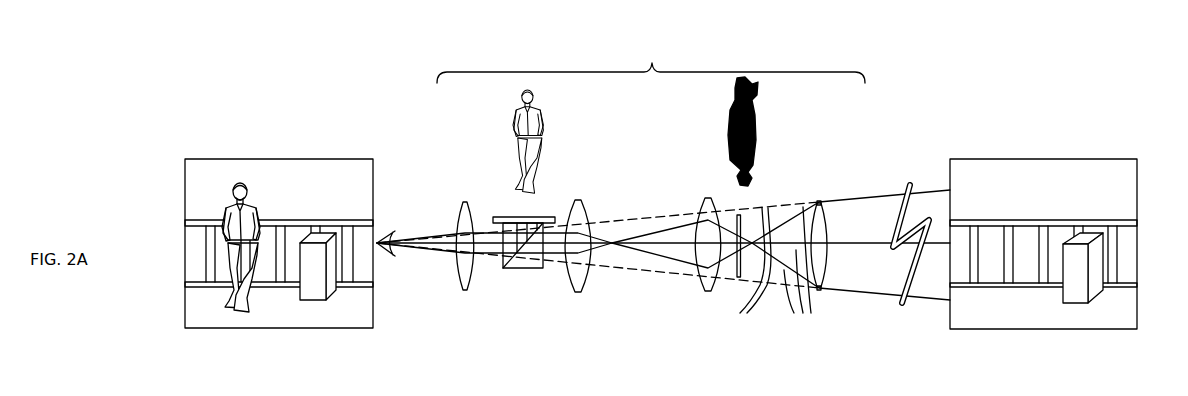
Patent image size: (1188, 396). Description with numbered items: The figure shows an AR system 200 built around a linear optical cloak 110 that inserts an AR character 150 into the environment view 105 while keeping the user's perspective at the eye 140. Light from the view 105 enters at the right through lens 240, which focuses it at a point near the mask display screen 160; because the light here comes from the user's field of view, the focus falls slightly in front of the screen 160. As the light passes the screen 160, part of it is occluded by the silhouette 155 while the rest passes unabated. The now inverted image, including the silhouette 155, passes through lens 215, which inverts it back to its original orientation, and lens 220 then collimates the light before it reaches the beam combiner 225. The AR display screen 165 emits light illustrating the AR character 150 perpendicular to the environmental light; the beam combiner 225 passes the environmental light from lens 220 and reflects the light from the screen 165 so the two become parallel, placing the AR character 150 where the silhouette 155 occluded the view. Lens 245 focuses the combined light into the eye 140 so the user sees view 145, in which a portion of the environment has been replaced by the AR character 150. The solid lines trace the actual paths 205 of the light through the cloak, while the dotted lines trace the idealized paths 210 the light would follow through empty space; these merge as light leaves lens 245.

The AR system 200 is at (447, 44).
The optical cloak 110 is at (651, 60).
The view 105 is at (990, 330).
The view 145 is at (232, 329).
The eye 140 is at (382, 230).
The AR character 150 is at (515, 121).
The silhouette 155 is at (757, 119).
The mask display screen 160 is at (746, 213).
The AR display screen 165 is at (549, 213).
The actual paths 205 is at (798, 285).
The idealized paths 210 is at (752, 284).
The lens 215 is at (710, 197).
The lens 220 is at (578, 293).
The beam combiner 225 is at (527, 269).
The lens 240 is at (828, 257).
The lens 245 is at (463, 292).